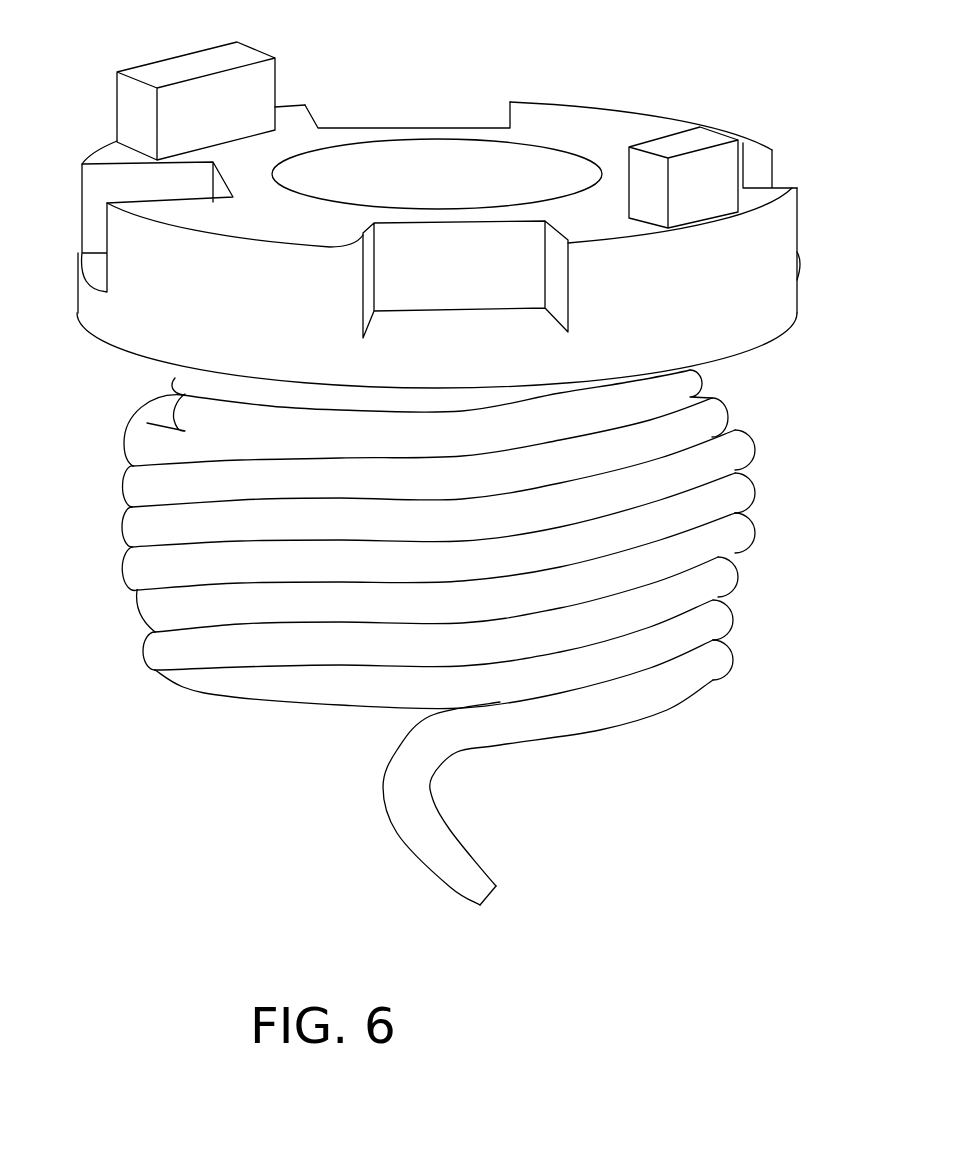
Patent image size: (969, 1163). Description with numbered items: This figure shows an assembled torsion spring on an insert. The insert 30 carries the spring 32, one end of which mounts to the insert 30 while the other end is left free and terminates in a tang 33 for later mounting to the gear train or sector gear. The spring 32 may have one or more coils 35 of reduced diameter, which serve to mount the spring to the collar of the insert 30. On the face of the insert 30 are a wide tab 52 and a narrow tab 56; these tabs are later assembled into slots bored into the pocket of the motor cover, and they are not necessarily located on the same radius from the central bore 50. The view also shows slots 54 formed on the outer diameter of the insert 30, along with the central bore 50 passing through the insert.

The insert 30 is at (180, 308).
The spring 32 is at (228, 677).
The tang 33 is at (497, 893).
The coils of reduced diameter 35 is at (207, 382).
The central bore 50 is at (372, 177).
The wide tab 52 is at (180, 68).
The slots 54 is at (97, 188).
The narrow tab 56 is at (702, 180).